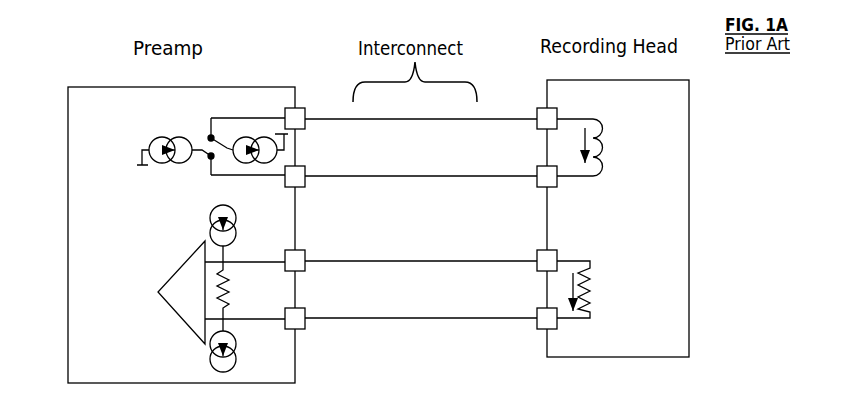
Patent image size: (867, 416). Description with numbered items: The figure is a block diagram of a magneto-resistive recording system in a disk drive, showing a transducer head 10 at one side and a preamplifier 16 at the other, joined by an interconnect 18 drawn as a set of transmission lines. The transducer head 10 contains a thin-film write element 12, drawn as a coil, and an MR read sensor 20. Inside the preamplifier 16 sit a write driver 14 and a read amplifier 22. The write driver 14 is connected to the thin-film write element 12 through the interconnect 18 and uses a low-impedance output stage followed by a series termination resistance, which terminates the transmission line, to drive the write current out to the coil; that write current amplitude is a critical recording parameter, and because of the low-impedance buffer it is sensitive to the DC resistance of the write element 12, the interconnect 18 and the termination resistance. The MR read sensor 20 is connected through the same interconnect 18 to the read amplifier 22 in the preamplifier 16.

The transducer head 10 is at (687, 115).
The thin-film write element 12 is at (610, 182).
The write driver 14 is at (162, 182).
The preamplifier 16 is at (108, 79).
The interconnect 18 is at (406, 250).
The MR read sensor 20 is at (603, 325).
The read amplifier 22 is at (175, 327).